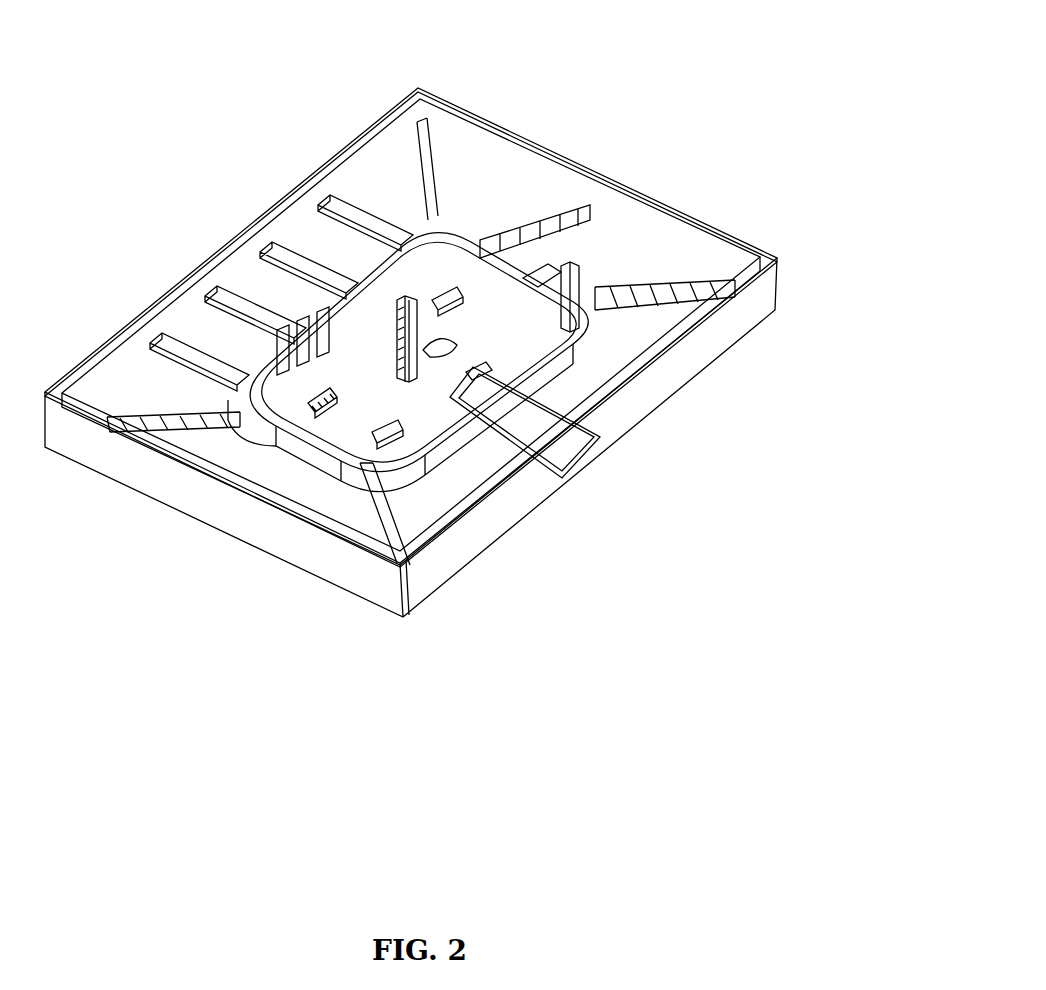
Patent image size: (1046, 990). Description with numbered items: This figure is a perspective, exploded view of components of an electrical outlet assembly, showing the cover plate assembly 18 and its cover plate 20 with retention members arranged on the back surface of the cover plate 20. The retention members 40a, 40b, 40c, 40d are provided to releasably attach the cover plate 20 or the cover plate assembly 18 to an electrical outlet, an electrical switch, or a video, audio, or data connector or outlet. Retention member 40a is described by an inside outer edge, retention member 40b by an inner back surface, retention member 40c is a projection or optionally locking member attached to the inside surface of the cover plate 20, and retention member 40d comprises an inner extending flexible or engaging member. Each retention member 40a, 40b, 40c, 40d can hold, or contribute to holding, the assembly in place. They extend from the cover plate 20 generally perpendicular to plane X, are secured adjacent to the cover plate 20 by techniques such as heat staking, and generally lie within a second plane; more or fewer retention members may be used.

The cover plate assembly 18 is at (177, 146).
The cover plate 20 is at (478, 186).
The retention member 40a is at (313, 430).
The retention member 40b is at (348, 440).
The projection/optionally locking retention member 40c is at (398, 315).
The retention member 40d is at (353, 322).